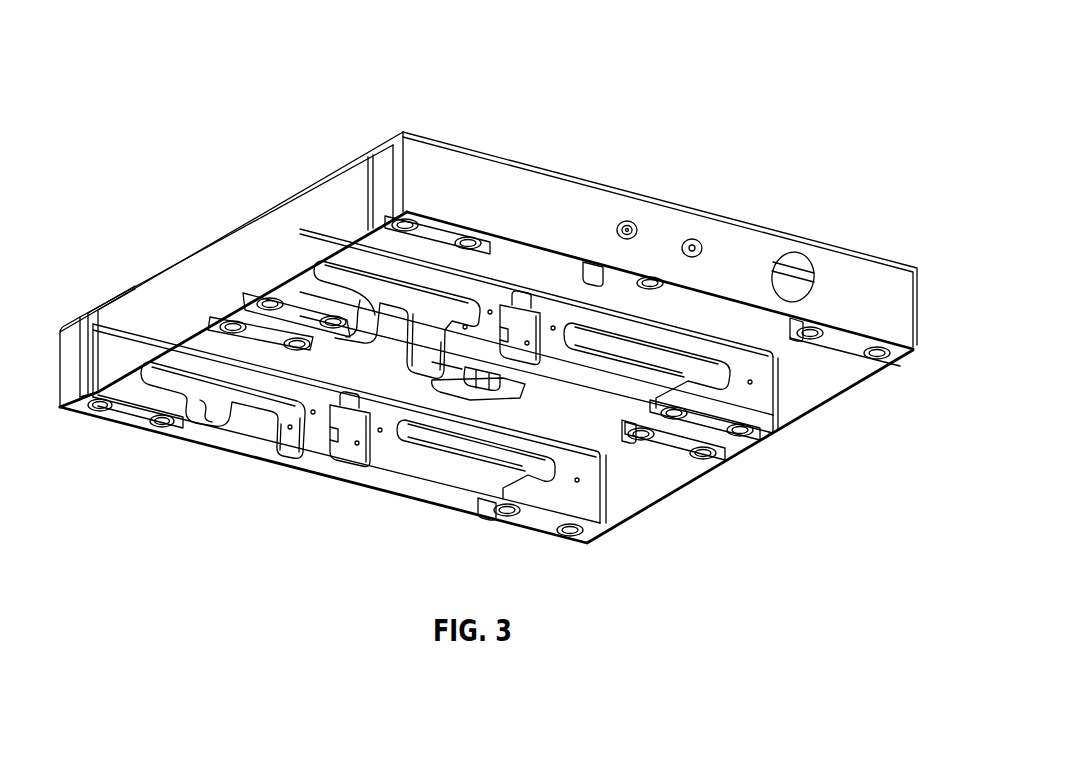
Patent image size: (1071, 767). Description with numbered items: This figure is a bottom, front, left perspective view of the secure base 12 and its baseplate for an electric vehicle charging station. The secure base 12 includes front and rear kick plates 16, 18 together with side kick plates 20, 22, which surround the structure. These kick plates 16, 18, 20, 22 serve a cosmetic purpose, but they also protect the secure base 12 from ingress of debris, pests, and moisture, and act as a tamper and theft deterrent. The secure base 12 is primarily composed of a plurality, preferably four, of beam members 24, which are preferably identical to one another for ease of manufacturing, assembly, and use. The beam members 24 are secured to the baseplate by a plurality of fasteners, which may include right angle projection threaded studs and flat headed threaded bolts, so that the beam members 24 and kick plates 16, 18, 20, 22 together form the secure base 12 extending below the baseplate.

The secure base 12 is at (191, 49).
The front kick plate 16 is at (763, 247).
The rear kick plate 18 is at (427, 485).
The side kick plate 20 is at (817, 380).
The side kick plate 22 is at (207, 263).
The beam members 24 is at (678, 290).